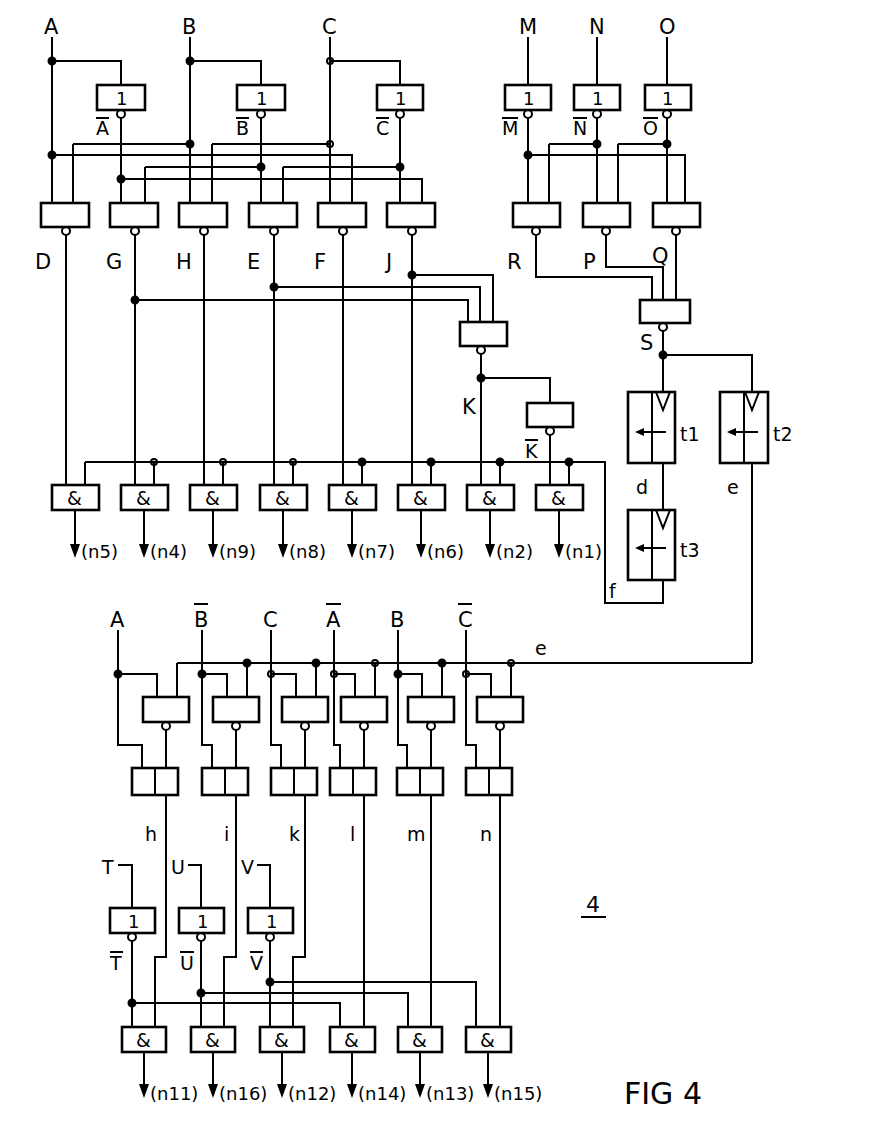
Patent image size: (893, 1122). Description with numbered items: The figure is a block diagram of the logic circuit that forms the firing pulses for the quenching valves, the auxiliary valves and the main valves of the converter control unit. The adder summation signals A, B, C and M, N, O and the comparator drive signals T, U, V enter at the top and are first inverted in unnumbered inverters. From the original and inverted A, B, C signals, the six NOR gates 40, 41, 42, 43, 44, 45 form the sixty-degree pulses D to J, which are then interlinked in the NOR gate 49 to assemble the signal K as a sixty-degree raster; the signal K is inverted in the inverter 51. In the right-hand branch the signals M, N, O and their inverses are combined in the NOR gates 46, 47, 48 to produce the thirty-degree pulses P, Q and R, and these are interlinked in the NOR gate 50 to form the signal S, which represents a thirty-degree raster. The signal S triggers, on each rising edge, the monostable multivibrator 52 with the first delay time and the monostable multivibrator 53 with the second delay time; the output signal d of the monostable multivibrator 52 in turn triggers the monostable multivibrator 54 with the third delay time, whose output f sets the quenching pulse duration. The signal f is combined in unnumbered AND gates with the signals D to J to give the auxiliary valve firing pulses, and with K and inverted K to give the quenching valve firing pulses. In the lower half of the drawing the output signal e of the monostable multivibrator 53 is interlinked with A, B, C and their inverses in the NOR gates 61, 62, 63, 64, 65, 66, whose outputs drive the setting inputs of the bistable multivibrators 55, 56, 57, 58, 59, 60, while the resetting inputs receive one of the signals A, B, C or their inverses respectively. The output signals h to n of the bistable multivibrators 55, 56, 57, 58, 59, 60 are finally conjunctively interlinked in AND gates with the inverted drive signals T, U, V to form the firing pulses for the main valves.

The NOR gate 40 is at (82, 228).
The NOR gate 41 is at (151, 228).
The NOR gate 42 is at (220, 228).
The NOR gate 43 is at (290, 228).
The NOR gate 44 is at (359, 228).
The NOR gate 45 is at (428, 228).
The NOR gate 46 is at (553, 228).
The NOR gate 47 is at (623, 228).
The NOR gate 48 is at (693, 228).
The NOR gate 49 is at (505, 347).
The NOR gate 50 is at (690, 311).
The inverter 51 is at (563, 403).
The monostable multivibrator 52 is at (637, 383).
The monostable multivibrator 53 is at (729, 383).
The monostable multivibrator 54 is at (670, 580).
The bistable multivibrator 55 is at (174, 795).
The bistable multivibrator 56 is at (244, 795).
The bistable multivibrator 57 is at (313, 795).
The bistable multivibrator 58 is at (372, 795).
The bistable multivibrator 59 is at (439, 795).
The bistable multivibrator 60 is at (508, 795).
The NOR gate 61 is at (183, 722).
The NOR gate 62 is at (253, 722).
The NOR gate 63 is at (322, 722).
The NOR gate 64 is at (381, 722).
The NOR gate 65 is at (448, 722).
The NOR gate 66 is at (517, 722).